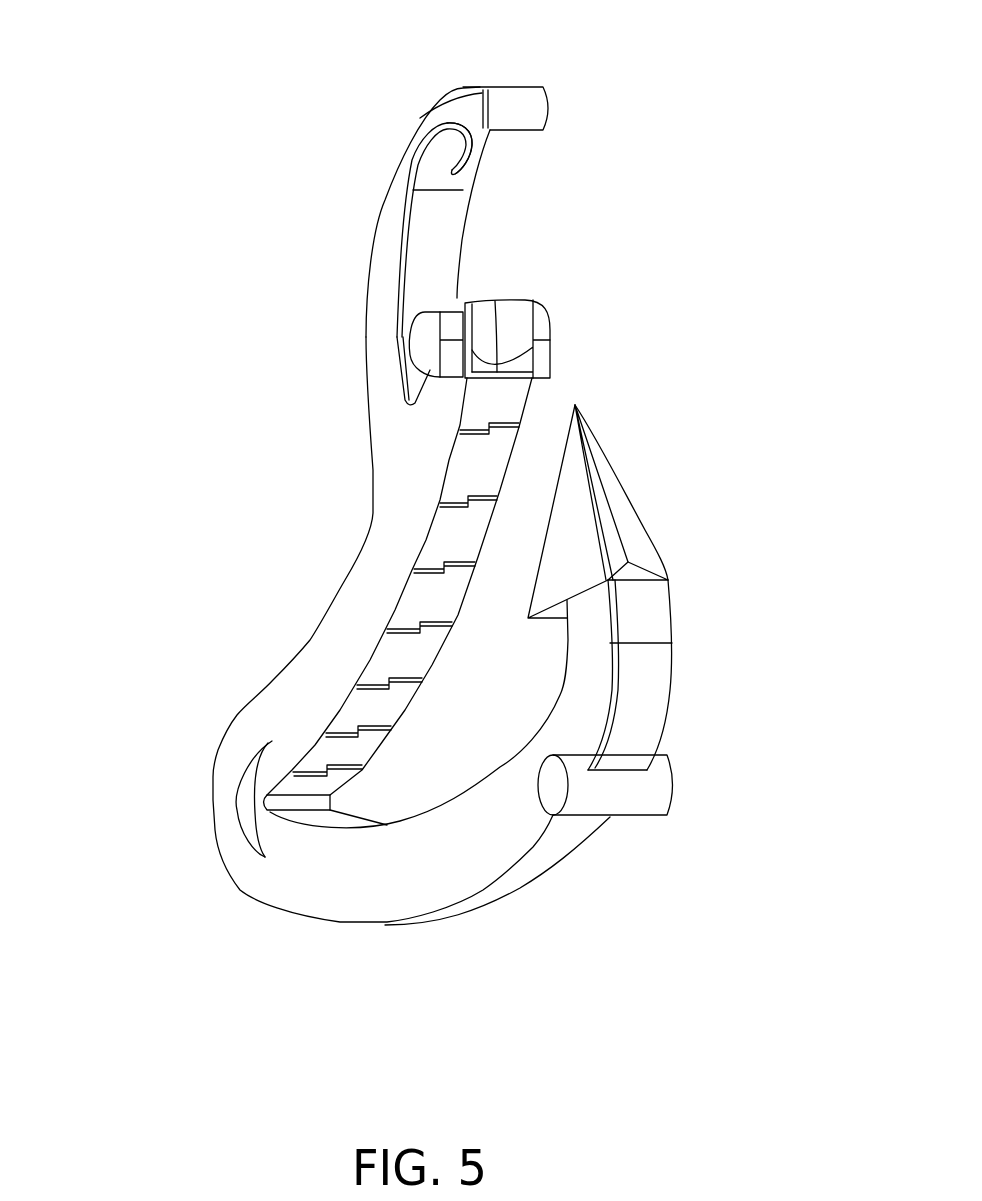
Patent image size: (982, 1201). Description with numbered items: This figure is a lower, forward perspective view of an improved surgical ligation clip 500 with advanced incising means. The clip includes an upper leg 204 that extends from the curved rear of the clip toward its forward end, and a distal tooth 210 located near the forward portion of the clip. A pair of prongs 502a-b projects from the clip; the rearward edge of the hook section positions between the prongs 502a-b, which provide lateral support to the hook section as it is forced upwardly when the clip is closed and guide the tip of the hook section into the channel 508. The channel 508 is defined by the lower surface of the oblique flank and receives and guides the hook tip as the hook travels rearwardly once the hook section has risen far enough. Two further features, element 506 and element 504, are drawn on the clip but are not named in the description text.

The surgical ligation clip 500 is at (93, 80).
The upper leg 204 is at (387, 305).
The channel 508 is at (455, 155).
The prongs 502a-b is at (487, 342).
The wedge member 506 is at (575, 405).
The curved facet 504 is at (628, 523).
The distal tooth 210 is at (563, 558).